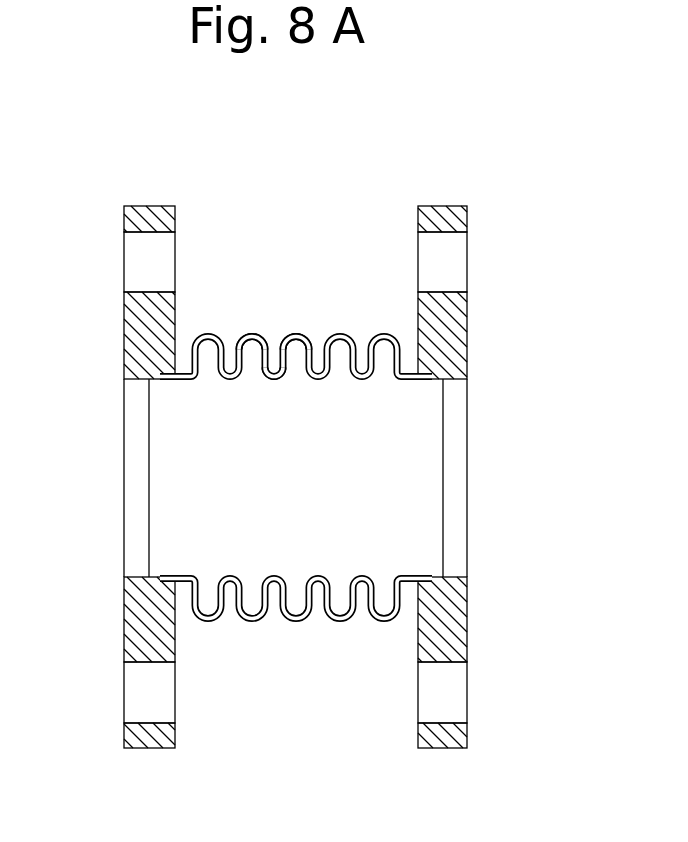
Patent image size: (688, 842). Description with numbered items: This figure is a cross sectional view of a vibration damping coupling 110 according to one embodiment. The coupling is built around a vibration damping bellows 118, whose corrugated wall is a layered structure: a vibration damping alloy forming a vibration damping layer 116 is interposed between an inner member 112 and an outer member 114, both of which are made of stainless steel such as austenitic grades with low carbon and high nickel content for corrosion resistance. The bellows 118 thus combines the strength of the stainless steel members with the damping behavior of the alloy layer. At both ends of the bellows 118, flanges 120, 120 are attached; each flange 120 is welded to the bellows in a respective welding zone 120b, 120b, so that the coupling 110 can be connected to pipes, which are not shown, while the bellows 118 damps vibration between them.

The vibration damping coupling 110 is at (495, 116).
The inner member 112 is at (275, 383).
The outer member 114 is at (250, 333).
The vibration damping layer 116 is at (298, 333).
The vibration damping bellows 118 is at (353, 288).
The flange 120 is at (132, 314).
The welding zone 120b is at (151, 497).